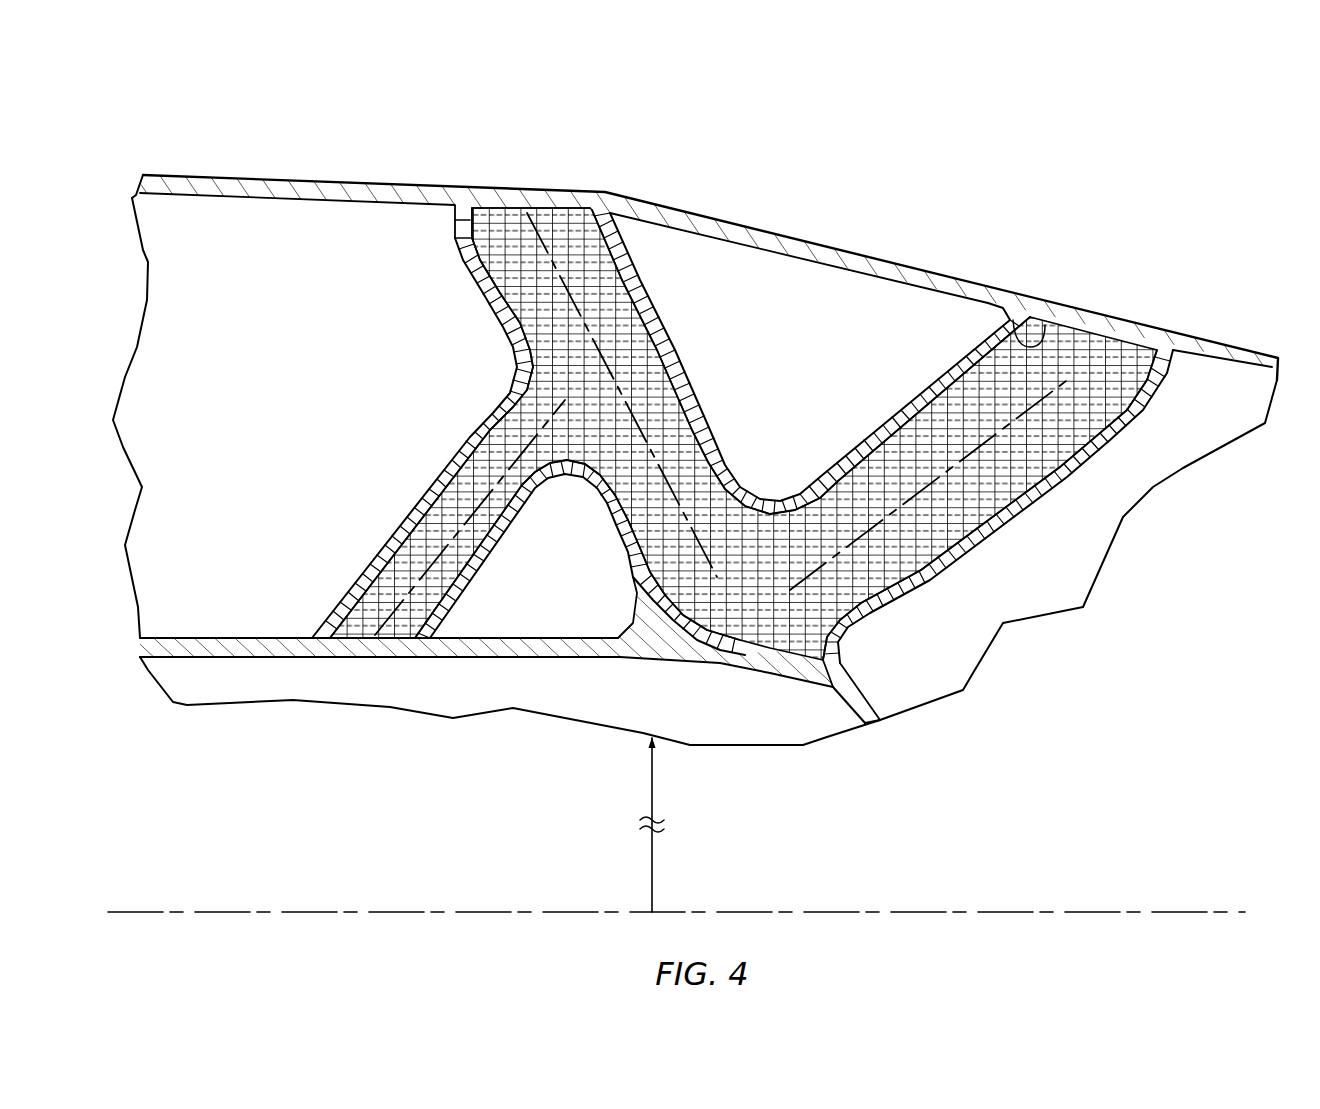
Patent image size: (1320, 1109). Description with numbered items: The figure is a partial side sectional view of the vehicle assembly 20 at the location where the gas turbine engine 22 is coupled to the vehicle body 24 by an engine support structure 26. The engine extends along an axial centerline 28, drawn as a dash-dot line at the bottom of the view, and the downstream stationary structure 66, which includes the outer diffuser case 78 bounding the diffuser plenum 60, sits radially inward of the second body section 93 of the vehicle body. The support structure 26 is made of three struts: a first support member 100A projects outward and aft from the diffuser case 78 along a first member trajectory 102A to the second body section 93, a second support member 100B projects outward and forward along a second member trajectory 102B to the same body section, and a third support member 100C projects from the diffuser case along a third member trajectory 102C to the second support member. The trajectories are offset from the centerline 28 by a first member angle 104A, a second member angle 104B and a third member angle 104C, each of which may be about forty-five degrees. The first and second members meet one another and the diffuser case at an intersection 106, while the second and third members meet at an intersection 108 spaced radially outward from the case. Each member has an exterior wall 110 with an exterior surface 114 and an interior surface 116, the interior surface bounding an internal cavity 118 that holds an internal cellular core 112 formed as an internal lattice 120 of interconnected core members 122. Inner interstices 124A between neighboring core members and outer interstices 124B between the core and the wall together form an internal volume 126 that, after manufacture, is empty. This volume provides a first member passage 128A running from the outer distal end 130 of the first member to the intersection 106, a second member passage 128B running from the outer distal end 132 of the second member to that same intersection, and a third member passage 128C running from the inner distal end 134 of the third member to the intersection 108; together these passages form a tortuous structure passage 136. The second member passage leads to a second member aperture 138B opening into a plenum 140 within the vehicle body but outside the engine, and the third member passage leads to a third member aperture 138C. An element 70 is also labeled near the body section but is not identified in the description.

The vehicle assembly 20 is at (1173, 178).
The gas turbine engine 22 is at (218, 603).
The vehicle body 24 is at (207, 151).
The engine support structure 26 is at (383, 372).
The axial centerline 28 is at (123, 905).
The diffuser plenum 60 is at (462, 699).
The downstream stationary structure 66 is at (178, 636).
The strut assembly 70 is at (1024, 250).
The outer diffuser case 78 is at (222, 667).
The second body section 93 is at (285, 171).
The first support member 100A is at (888, 422).
The second support member 100B is at (680, 350).
The third support member 100C is at (381, 548).
The first member trajectory 102A is at (1040, 470).
The second member trajectory 102B is at (626, 508).
The third member trajectory 102C is at (477, 493).
The first member angle 104A is at (900, 510).
The second member angle 104B is at (683, 520).
The third member angle 104C is at (450, 500).
The intersection 106 is at (765, 674).
The intersection 108 is at (495, 385).
The exterior wall 110 is at (457, 277).
The internal cellular core 112 is at (1200, 410).
The exterior surface 114 is at (947, 371).
The interior surface 116 is at (1058, 317).
The internal cavity 118 is at (859, 449).
The internal lattice 120 is at (1140, 420).
The core members 122 is at (683, 440).
The inner interstices 124A is at (647, 357).
The outer interstices 124B is at (695, 450).
The internal volume 126 is at (577, 210).
The first member passage 128A is at (1083, 456).
The second member passage 128B is at (501, 328).
The third member passage 128C is at (484, 559).
The outer distal end 130 is at (1127, 322).
The outer distal end 132 is at (512, 206).
The inner distal end 134 is at (357, 658).
The structure passage 136 is at (866, 618).
The second member aperture 138B is at (455, 222).
The third member aperture 138C is at (330, 622).
The plenum 140 is at (284, 284).